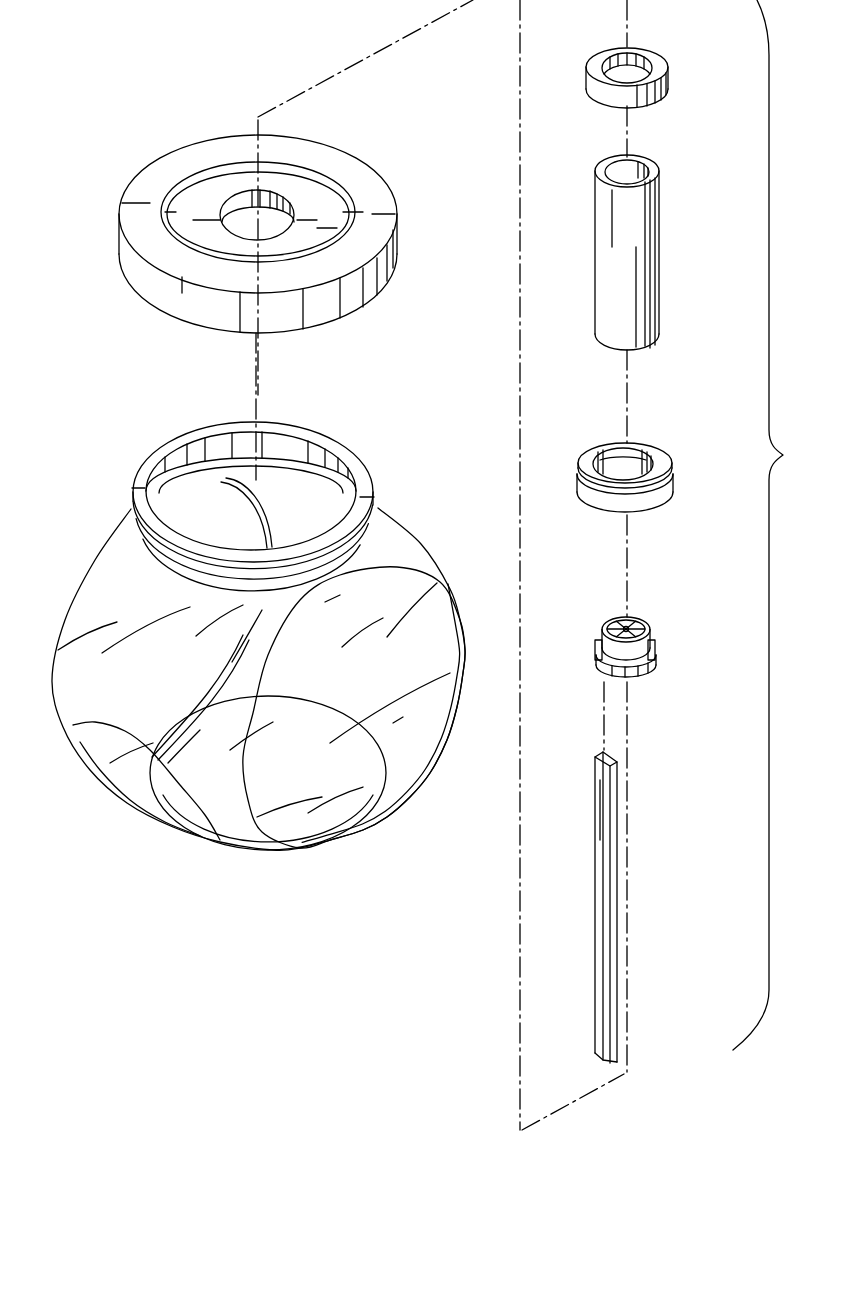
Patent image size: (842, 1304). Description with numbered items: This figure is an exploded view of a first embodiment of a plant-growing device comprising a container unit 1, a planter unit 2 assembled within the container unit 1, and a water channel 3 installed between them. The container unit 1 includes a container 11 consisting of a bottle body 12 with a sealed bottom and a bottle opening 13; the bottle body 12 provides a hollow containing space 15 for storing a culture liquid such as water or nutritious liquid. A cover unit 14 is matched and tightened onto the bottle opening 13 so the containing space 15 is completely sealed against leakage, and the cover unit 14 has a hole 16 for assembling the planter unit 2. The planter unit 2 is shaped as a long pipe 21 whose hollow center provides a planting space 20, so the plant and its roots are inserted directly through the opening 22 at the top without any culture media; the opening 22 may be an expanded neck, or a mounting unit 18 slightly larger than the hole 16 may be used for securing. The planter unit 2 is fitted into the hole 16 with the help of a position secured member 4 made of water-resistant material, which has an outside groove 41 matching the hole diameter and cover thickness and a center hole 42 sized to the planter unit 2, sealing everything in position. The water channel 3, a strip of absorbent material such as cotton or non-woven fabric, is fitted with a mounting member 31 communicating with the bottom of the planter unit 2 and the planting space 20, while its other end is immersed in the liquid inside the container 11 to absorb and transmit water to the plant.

The container unit 1 is at (394, 507).
The container 11 is at (378, 529).
The bottle body 12 is at (406, 561).
The bottle opening 13 is at (361, 471).
The cover unit 14 is at (178, 308).
The containing space 15 is at (293, 470).
The hole 16 is at (290, 217).
The mounting unit 18 is at (667, 87).
The planter unit 2 is at (658, 312).
The planting space 20 is at (659, 202).
The long pipe 21 is at (647, 278).
The opening 22 is at (652, 173).
The water channel 3 is at (610, 827).
The mounting member 31 is at (660, 647).
The position secured member 4 is at (672, 463).
The outside groove 41 is at (670, 488).
The center hole 42 is at (642, 447).